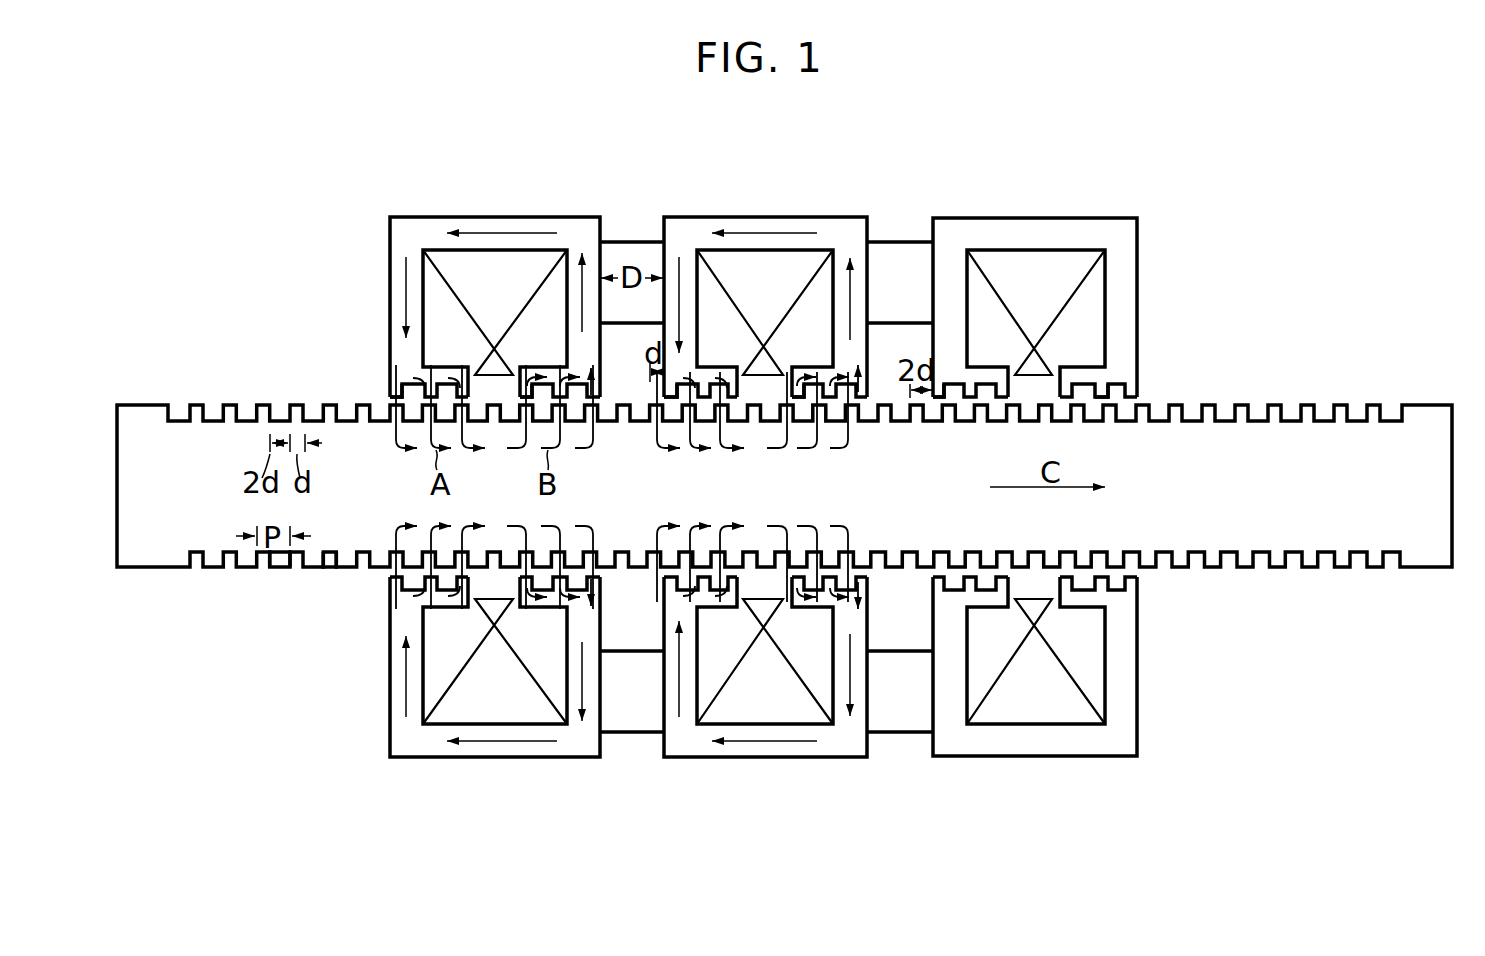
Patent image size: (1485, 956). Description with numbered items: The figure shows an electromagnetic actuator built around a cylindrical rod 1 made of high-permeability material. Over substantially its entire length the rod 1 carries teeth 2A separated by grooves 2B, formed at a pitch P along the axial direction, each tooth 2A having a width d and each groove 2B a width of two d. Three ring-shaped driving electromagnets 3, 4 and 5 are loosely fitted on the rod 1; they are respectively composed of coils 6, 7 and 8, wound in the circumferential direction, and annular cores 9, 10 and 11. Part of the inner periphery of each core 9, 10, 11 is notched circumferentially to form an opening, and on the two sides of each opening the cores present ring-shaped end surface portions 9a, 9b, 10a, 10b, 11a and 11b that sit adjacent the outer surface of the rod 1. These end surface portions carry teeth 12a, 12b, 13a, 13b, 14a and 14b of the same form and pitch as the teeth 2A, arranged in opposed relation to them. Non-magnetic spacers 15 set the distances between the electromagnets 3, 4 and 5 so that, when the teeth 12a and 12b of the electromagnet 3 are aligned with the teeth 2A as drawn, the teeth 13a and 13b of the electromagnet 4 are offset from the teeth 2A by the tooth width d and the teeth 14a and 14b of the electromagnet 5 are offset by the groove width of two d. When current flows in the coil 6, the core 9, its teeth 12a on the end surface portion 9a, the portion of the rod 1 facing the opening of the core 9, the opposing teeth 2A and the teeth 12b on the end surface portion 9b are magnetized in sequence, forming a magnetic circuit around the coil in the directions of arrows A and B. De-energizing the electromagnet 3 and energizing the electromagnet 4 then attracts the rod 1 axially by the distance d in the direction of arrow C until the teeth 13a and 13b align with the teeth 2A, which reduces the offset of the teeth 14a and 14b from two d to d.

The cylindrical rod 1 is at (178, 433).
The teeth 2A is at (323, 569).
The grooves 2B is at (283, 563).
The driving electromagnet 3 is at (471, 317).
The driving electromagnet 4 is at (759, 317).
The driving electromagnet 5 is at (1034, 318).
The coil 6 is at (527, 272).
The coil 7 is at (794, 272).
The coil 8 is at (1047, 272).
The core 9 is at (406, 232).
The end surface portion 9a is at (394, 386).
The end surface portion 9b is at (555, 408).
The core 10 is at (683, 245).
The end surface portion 10a is at (668, 432).
The end surface portion 10b is at (842, 408).
The core 11 is at (947, 243).
The end surface portion 11a is at (935, 438).
The end surface portion 11b is at (1133, 360).
The teeth 12a is at (352, 375).
The teeth 12b is at (521, 396).
The teeth 13a is at (662, 393).
The teeth 13b is at (822, 392).
The teeth 14a is at (932, 398).
The teeth 14b is at (1102, 395).
The spacers 15 is at (614, 252).